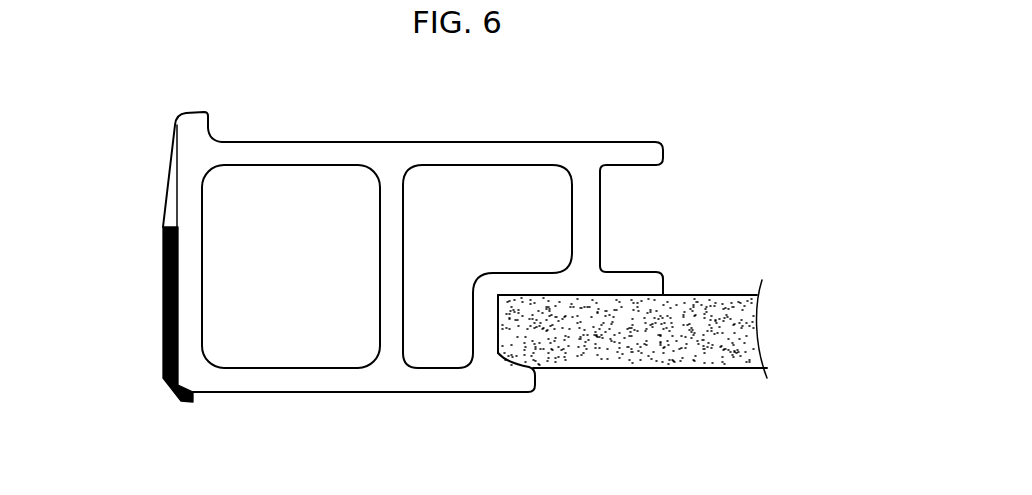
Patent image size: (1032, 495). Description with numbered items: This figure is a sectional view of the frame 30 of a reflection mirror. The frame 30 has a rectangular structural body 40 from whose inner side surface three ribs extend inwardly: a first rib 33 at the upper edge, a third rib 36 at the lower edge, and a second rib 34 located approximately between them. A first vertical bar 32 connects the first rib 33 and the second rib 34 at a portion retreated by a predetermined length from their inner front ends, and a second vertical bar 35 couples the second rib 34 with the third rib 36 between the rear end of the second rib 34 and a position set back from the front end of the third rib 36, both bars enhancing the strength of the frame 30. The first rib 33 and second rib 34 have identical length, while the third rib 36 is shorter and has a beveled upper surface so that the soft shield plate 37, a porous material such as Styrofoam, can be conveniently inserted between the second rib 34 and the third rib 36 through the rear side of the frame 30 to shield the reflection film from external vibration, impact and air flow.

The frame 30 is at (802, 340).
The first vertical bar 32 is at (587, 218).
The first rib 33 is at (652, 153).
The second rib 34 is at (652, 283).
The second vertical bar 35 is at (485, 328).
The third rib 36 is at (528, 380).
The soft shield plate 37 is at (708, 350).
The rectangular structural body 40 is at (190, 268).